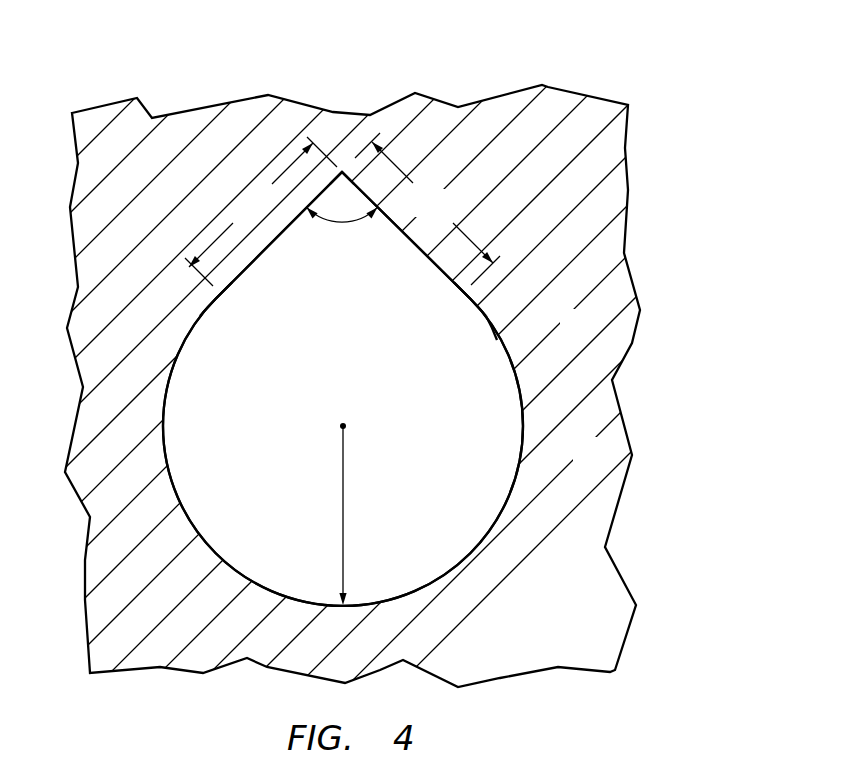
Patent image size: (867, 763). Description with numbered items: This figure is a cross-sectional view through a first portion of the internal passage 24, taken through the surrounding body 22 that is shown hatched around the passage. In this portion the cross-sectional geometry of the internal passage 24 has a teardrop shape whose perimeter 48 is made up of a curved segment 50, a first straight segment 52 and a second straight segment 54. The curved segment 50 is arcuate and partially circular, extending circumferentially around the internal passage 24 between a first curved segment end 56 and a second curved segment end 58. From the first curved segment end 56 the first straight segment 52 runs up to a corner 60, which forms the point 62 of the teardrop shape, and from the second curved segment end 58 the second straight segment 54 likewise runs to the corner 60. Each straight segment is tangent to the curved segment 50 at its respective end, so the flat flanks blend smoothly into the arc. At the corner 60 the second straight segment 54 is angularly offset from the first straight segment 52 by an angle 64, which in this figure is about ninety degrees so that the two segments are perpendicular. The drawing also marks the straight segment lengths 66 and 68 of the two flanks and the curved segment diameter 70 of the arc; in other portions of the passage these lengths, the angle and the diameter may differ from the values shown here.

The body 22 is at (640, 147).
The internal passage 24 is at (505, 470).
The perimeter 48 is at (491, 325).
The curved segment 50 is at (180, 455).
The first straight segment 52 is at (408, 256).
The second straight segment 54 is at (285, 247).
The first curved segment end 56 is at (470, 299).
The second curved segment end 58 is at (222, 294).
The corner 60 is at (350, 113).
The point 62 is at (342, 172).
The angle 64 is at (342, 222).
The straight segment length 66 is at (427, 209).
The straight segment length 68 is at (261, 211).
The curved segment diameter 70 is at (345, 503).